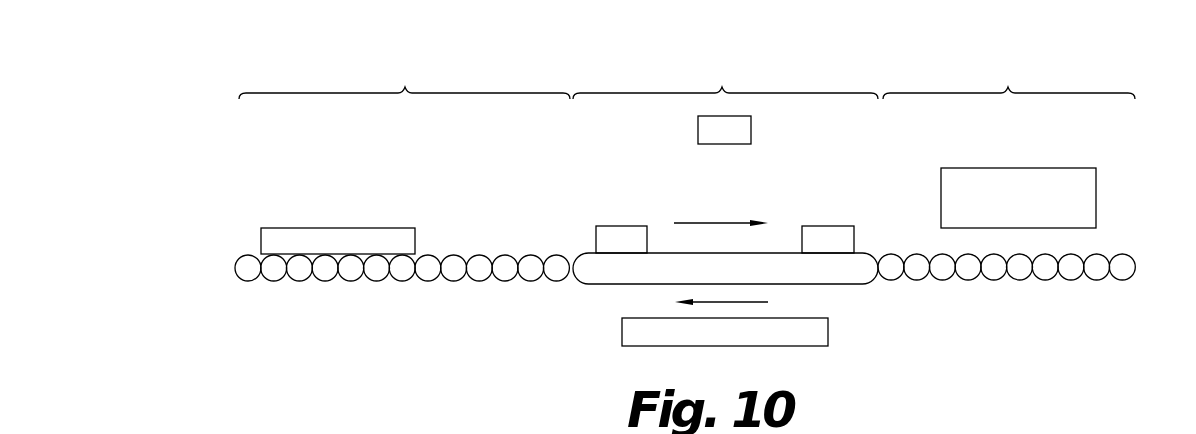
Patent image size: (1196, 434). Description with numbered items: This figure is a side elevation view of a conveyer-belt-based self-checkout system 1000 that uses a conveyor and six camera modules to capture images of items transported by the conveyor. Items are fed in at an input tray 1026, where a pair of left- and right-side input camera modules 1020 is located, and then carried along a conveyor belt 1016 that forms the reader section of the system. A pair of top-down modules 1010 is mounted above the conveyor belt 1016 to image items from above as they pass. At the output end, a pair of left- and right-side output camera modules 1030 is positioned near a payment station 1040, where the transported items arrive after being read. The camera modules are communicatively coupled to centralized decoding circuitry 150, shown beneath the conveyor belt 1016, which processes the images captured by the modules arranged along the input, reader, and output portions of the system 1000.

The conveyer-belt-based self-checkout system 1000 is at (258, 60).
The input tray 1026 is at (309, 228).
The input camera modules 1020 is at (610, 226).
The output camera modules 1030 is at (835, 226).
The top-down modules 1010 is at (751, 128).
The payment station 1040 is at (1096, 197).
The conveyor belt 1016 is at (868, 284).
The centralized decoding circuitry 150 is at (828, 330).